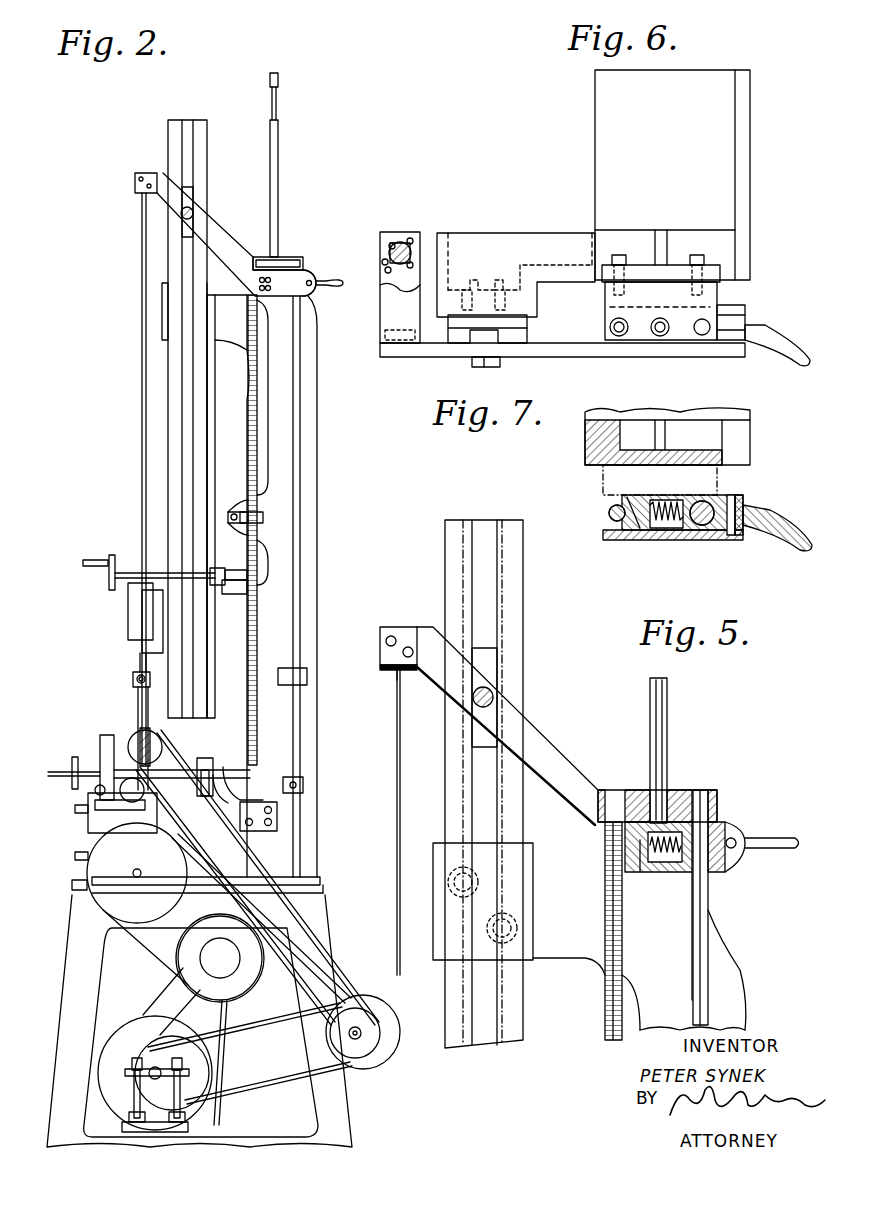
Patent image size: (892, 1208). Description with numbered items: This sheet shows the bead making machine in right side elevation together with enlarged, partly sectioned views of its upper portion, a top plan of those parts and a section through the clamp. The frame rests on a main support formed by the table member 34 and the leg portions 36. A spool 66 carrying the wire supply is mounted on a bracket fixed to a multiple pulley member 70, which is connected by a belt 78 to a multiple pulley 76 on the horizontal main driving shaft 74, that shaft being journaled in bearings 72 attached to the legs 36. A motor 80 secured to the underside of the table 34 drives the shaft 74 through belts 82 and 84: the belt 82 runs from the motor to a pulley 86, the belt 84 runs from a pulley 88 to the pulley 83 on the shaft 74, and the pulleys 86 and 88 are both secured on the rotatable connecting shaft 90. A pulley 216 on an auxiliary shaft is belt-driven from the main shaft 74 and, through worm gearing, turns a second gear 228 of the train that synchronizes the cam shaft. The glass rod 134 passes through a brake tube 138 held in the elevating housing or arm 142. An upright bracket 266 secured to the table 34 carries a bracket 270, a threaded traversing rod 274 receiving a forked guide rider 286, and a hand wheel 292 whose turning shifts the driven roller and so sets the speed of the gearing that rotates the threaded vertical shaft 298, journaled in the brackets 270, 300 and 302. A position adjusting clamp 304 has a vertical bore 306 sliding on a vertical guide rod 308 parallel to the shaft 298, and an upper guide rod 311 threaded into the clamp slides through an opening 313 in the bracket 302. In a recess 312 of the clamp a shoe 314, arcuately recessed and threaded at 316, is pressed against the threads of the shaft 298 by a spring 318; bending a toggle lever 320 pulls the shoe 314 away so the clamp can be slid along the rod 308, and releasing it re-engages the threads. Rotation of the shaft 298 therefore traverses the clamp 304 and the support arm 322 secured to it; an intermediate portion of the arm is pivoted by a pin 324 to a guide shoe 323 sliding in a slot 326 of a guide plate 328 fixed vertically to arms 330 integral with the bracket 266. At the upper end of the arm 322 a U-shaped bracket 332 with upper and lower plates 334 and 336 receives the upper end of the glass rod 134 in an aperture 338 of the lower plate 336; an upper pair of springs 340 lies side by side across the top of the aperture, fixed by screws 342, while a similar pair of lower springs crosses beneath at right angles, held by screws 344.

In FIG. 2, the table member 34 is at (320, 890).
In FIG. 2, the leg portions 36 is at (338, 1112).
In FIG. 2, the spool 66 is at (140, 722).
In FIG. 2, the multiple pulley member 70 is at (162, 740).
In FIG. 2, the bearings 72 is at (370, 1060).
In FIG. 2, the main driving shaft 74 is at (360, 1037).
In FIG. 2, the multiple pulley 76 is at (383, 1030).
In FIG. 2, the belt 78 is at (320, 940).
In FIG. 2, the motor 80 is at (198, 972).
In FIG. 2, the belt 82 is at (225, 1022).
In FIG. 2, the pulley 83 is at (380, 1012).
In FIG. 2, the belt 84 is at (243, 1093).
In FIG. 2, the pulley 86 is at (170, 1025).
In FIG. 2, the pulley 88 is at (210, 1060).
In FIG. 2, the rotatable connecting shaft 90 is at (135, 1095).
In FIG. 2, the glass rod 134 is at (142, 460).
In FIG. 6, the glass rod 134 is at (390, 255).
In FIG. 5, the glass rod 134 is at (396, 770).
In FIG. 2, the brake tube 138 is at (140, 650).
In FIG. 2, the elevating housing or arm 142 is at (133, 680).
In FIG. 2, the pulley 216 is at (105, 900).
In FIG. 2, the second gear 228 is at (86, 850).
In FIG. 2, the upright bracket 266 is at (318, 536).
In FIG. 6, the upright bracket 266 is at (752, 158).
In FIG. 7, the upright bracket 266 is at (740, 432).
In FIG. 5, the upright bracket 266 is at (735, 975).
In FIG. 2, the bracket 270 is at (277, 822).
In FIG. 2, the traversing rod 274 is at (93, 767).
In FIG. 2, the forked guide rider 286 is at (202, 764).
In FIG. 2, the hand wheel 292 is at (68, 770).
In FIG. 2, the vertical shaft 298 is at (257, 630).
In FIG. 6, the vertical shaft 298 is at (618, 333).
In FIG. 7, the vertical shaft 298 is at (608, 513).
In FIG. 5, the vertical shaft 298 is at (622, 965).
In FIG. 2, the bracket 300 is at (265, 515).
In FIG. 2, the bracket 302 is at (290, 262).
In FIG. 6, the bracket 302 is at (716, 297).
In FIG. 5, the bracket 302 is at (635, 792).
In FIG. 2, the position adjusting clamp 304 is at (310, 280).
In FIG. 6, the position adjusting clamp 304 is at (735, 310).
In FIG. 7, the position adjusting clamp 304 is at (735, 497).
In FIG. 5, the position adjusting clamp 304 is at (744, 835).
In FIG. 7, the vertical bore 306 is at (730, 535).
In FIG. 5, the vertical bore 306 is at (726, 825).
In FIG. 6, the vertical guide rod 308 is at (704, 333).
In FIG. 7, the vertical guide rod 308 is at (700, 530).
In FIG. 5, the vertical guide rod 308 is at (708, 897).
In FIG. 2, the upper guide rod 311 is at (273, 180).
In FIG. 6, the upper guide rod 311 is at (661, 333).
In FIG. 5, the upper guide rod 311 is at (665, 705).
In FIG. 7, the recess 312 is at (668, 528).
In FIG. 5, the recess 312 is at (668, 868).
In FIG. 5, the opening 313 is at (670, 790).
In FIG. 7, the shoe 314 is at (620, 540).
In FIG. 5, the shoe 314 is at (642, 872).
In FIG. 7, the threaded portion of shoe 316 is at (627, 503).
In FIG. 7, the spring 318 is at (668, 515).
In FIG. 5, the spring 318 is at (690, 815).
In FIG. 2, the toggle lever 320 is at (328, 288).
In FIG. 6, the toggle lever 320 is at (790, 348).
In FIG. 7, the toggle lever 320 is at (795, 540).
In FIG. 5, the toggle lever 320 is at (770, 843).
In FIG. 2, the support arm 322 is at (210, 232).
In FIG. 6, the support arm 322 is at (535, 358).
In FIG. 7, the support arm 322 is at (605, 535).
In FIG. 5, the support arm 322 is at (525, 730).
In FIG. 2, the guide shoe 323 is at (188, 200).
In FIG. 6, the guide shoe 323 is at (485, 335).
In FIG. 5, the guide shoe 323 is at (483, 667).
In FIG. 2, the pin 324 is at (190, 210).
In FIG. 6, the pin 324 is at (478, 362).
In FIG. 5, the pin 324 is at (493, 702).
In FIG. 2, the slot 326 is at (188, 150).
In FIG. 6, the slot 326 is at (525, 335).
In FIG. 5, the slot 326 is at (483, 530).
In FIG. 2, the guide plate 328 is at (207, 388).
In FIG. 6, the guide plate 328 is at (520, 325).
In FIG. 5, the guide plate 328 is at (523, 610).
In FIG. 2, the arms 330 is at (215, 298).
In FIG. 6, the arms 330 is at (512, 233).
In FIG. 2, the U-shaped bracket 332 is at (138, 195).
In FIG. 6, the U-shaped bracket 332 is at (400, 287).
In FIG. 5, the U-shaped bracket 332 is at (382, 668).
In FIG. 6, the upper plate 334 is at (386, 345).
In FIG. 6, the lower plate 336 is at (385, 280).
In FIG. 6, the aperture 338 is at (404, 248).
In FIG. 6, the upper pair of springs 340 is at (400, 243).
In FIG. 5, the upper pair of springs 340 is at (403, 650).
In FIG. 6, the screws 342 is at (391, 243).
In FIG. 6, the screw 344 is at (412, 255).
In FIG. 5, the screw 344 is at (405, 672).